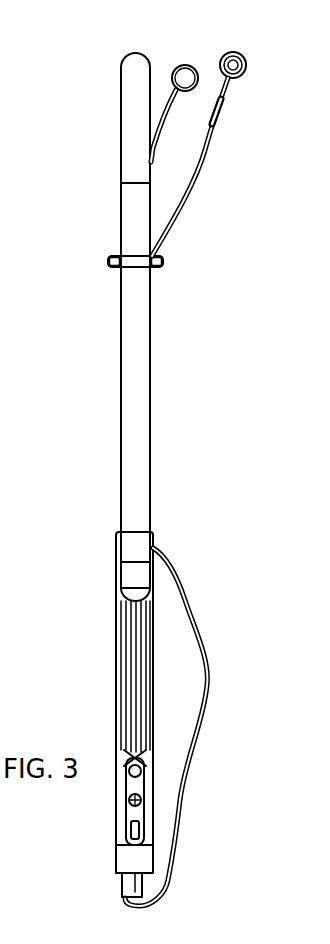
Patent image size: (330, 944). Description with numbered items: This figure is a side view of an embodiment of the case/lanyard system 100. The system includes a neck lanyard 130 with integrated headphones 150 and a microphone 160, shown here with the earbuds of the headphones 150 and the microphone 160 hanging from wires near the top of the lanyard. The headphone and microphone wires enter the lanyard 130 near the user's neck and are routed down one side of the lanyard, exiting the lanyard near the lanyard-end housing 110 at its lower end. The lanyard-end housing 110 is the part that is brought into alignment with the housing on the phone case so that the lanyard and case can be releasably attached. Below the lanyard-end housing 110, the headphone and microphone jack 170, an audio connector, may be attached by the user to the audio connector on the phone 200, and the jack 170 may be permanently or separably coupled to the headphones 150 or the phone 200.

The case/lanyard system 100 is at (182, 412).
The lanyard-end housing 110 is at (138, 573).
The neck lanyard 130 is at (140, 487).
The headphones 150 is at (182, 73).
The microphone 160 is at (210, 130).
The headphone and microphone jack 170 is at (130, 885).
The phone 200 is at (137, 813).